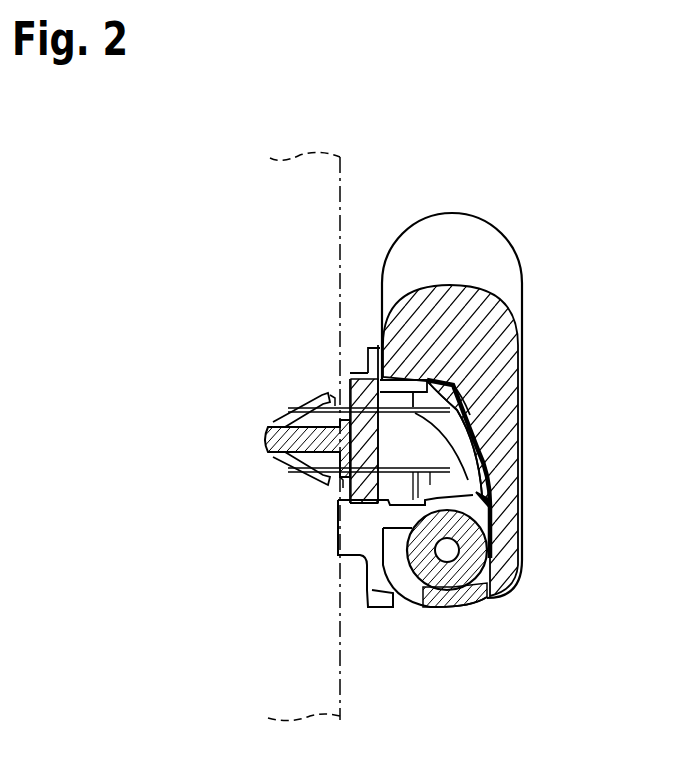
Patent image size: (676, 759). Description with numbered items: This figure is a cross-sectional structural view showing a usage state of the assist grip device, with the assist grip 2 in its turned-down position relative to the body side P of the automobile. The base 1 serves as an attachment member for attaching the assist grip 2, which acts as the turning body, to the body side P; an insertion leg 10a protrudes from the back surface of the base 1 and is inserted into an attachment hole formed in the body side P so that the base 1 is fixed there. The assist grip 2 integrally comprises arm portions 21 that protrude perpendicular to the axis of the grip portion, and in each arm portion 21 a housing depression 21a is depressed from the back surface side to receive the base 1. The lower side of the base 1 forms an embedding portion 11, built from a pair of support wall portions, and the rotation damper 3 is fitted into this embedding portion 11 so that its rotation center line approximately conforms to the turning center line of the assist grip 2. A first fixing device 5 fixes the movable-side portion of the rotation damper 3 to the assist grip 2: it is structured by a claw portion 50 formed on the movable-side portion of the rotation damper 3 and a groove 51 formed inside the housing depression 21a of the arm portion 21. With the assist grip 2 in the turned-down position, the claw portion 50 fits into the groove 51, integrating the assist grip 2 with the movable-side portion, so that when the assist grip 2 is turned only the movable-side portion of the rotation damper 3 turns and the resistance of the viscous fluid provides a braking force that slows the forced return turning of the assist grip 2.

The body side P is at (341, 178).
The assist grip 2 is at (456, 228).
The arm portions 21 is at (517, 512).
The housing depressions 21a is at (517, 412).
The base 1 is at (485, 450).
The embedding portion 11 is at (513, 550).
The insertion leg 10a is at (308, 403).
The rotation damper 3 is at (400, 593).
The claw portion 50 is at (503, 580).
The groove 51 is at (510, 580).
The first fixing device 5 is at (560, 656).